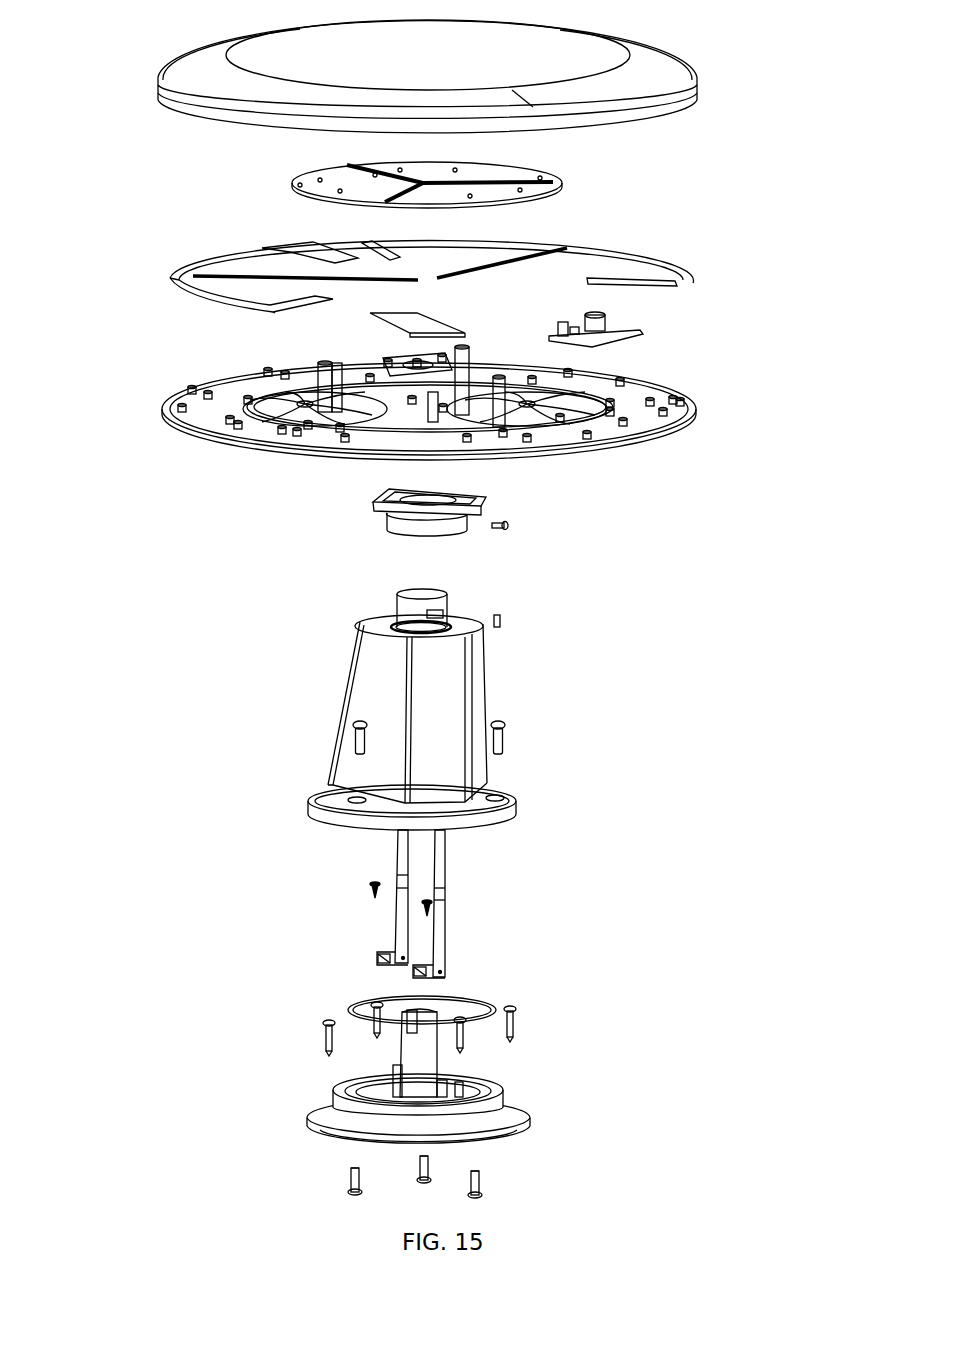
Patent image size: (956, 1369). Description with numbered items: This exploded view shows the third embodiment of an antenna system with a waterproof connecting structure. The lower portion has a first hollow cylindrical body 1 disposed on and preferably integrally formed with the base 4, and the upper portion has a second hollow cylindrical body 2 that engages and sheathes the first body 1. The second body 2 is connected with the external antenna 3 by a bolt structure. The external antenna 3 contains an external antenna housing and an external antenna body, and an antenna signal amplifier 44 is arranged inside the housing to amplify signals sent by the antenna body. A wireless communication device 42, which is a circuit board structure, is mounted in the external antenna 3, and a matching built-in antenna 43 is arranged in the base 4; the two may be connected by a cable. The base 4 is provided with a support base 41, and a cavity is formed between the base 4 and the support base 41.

The external antenna 3 is at (698, 98).
The antenna signal amplifier 44 is at (170, 280).
The wireless communication device 42 is at (640, 332).
The second hollow cylindrical body 2 is at (485, 498).
The first hollow cylindrical body 1 is at (448, 597).
The base 4 is at (563, 660).
The built-in antenna 43 is at (445, 888).
The support base 41 is at (515, 1105).